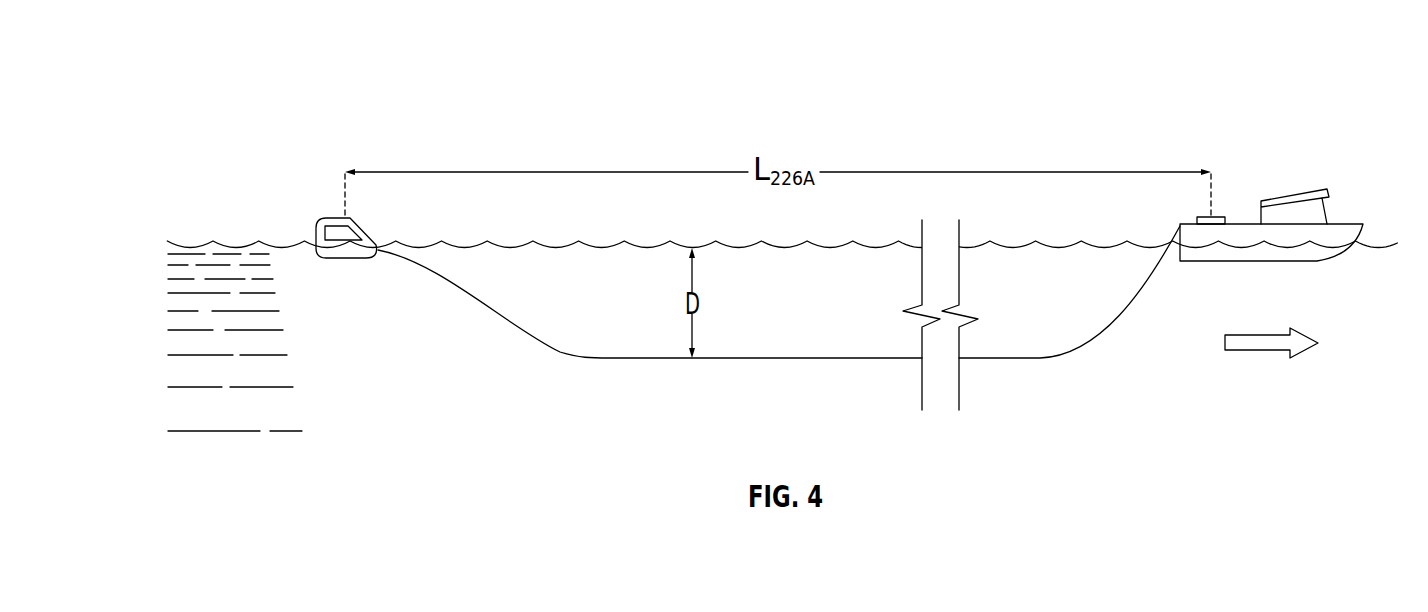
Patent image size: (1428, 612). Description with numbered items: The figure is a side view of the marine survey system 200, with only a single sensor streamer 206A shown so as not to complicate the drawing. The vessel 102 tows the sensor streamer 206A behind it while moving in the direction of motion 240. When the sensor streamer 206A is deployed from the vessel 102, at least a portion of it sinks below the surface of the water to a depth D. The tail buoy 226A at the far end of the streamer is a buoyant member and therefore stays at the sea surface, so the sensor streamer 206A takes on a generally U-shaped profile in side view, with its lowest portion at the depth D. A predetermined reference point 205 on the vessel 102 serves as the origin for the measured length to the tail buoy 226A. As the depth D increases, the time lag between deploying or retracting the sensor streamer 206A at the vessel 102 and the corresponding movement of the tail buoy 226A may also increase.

The marine survey system 200 is at (1337, 80).
The tail buoy 226A is at (334, 216).
The sensor streamer 206A is at (763, 280).
The reference point 205 is at (1198, 219).
The vessel 102 is at (1317, 191).
The direction of motion 240 is at (1257, 352).